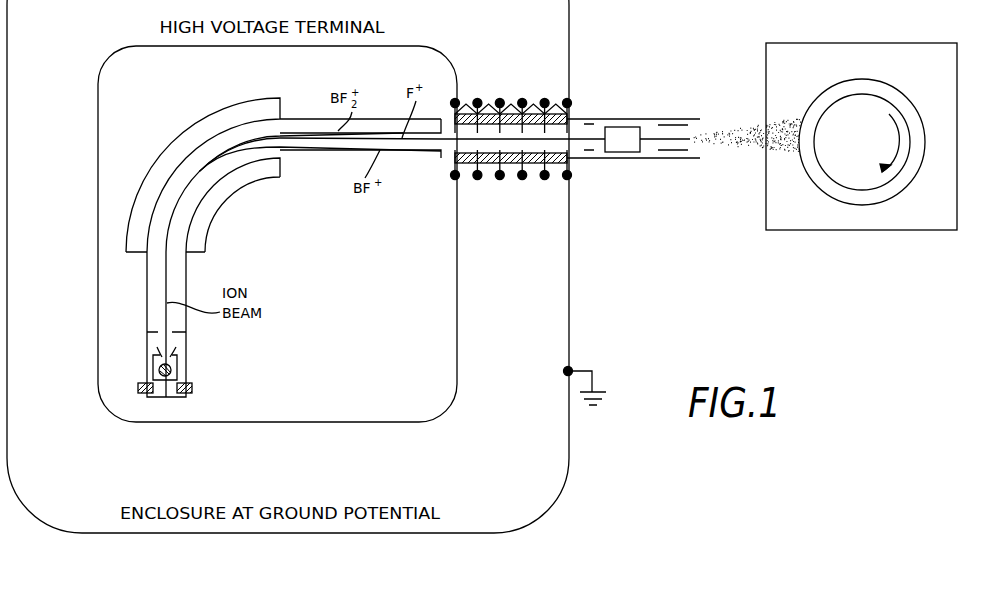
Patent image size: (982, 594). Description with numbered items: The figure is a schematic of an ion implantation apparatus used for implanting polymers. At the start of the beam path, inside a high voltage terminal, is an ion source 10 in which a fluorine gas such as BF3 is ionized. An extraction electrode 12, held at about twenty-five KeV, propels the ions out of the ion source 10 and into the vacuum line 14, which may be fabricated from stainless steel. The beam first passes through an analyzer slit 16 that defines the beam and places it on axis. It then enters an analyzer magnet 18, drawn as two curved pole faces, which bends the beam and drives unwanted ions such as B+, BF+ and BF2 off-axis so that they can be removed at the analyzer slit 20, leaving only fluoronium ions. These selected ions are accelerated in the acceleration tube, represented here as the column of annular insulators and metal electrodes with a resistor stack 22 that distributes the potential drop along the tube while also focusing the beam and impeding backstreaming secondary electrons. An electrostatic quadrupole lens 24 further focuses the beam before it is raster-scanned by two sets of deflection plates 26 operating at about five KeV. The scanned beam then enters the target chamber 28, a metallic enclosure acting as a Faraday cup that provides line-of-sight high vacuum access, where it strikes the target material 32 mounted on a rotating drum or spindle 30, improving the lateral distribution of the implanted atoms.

The ion source 10 is at (153, 358).
The extraction electrode 12 is at (176, 351).
The vacuum line 14 is at (144, 347).
The analyzer slit 16 is at (175, 342).
The analyzer magnet 18 is at (172, 147).
The analyzer slit 20 is at (441, 151).
The accelerator tube 22 is at (572, 174).
The electrostatic quadrupole lens 24 is at (589, 122).
The deflection plates 26 is at (667, 124).
The target chamber 28 is at (843, 43).
The rotating drum or spindle 30 is at (885, 97).
The target material 32 is at (811, 97).